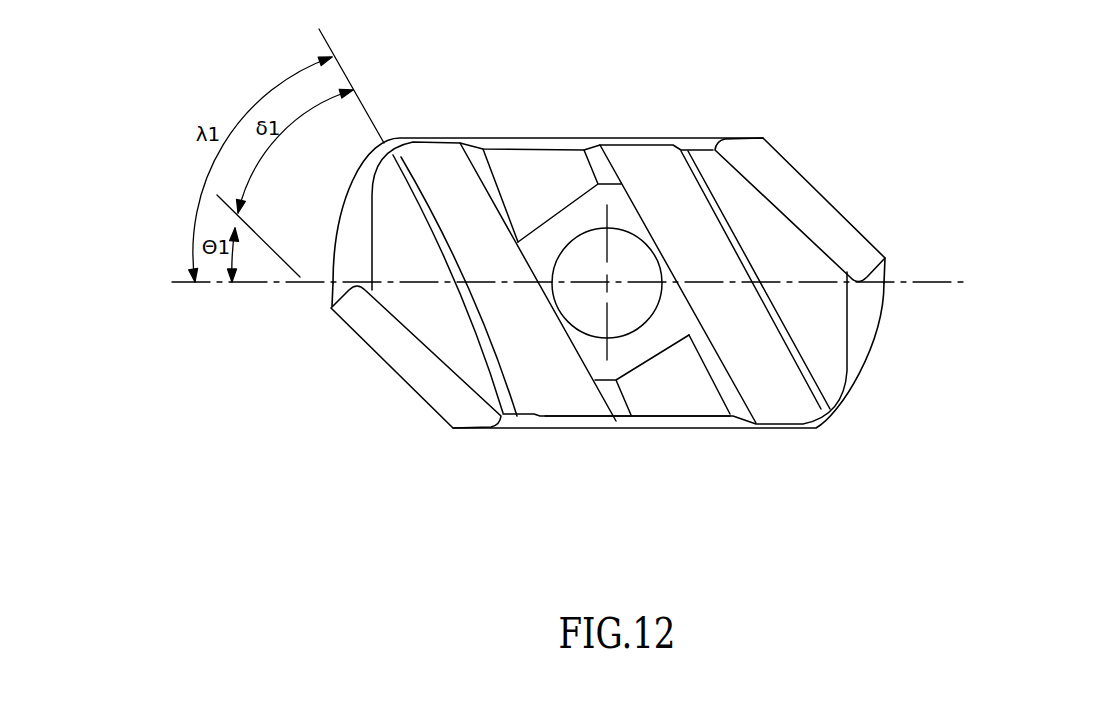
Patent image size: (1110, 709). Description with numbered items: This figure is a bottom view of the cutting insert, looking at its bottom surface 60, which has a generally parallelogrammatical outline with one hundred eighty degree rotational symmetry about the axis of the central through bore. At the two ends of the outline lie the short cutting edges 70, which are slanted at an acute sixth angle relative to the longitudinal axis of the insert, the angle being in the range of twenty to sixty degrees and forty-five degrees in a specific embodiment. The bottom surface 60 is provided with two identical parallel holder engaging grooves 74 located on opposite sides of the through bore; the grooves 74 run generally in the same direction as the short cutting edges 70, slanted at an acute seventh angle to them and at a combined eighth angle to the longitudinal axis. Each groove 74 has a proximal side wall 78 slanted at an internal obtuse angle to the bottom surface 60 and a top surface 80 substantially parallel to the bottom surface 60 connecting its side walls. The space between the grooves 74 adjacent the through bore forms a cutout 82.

The bottom surface 60 is at (733, 210).
The short cutting edges 70 is at (831, 201).
The holder engaging grooves 74 is at (554, 382).
The proximal side wall 78 is at (613, 392).
The top surface 80 is at (435, 168).
The cutout 82 is at (545, 233).